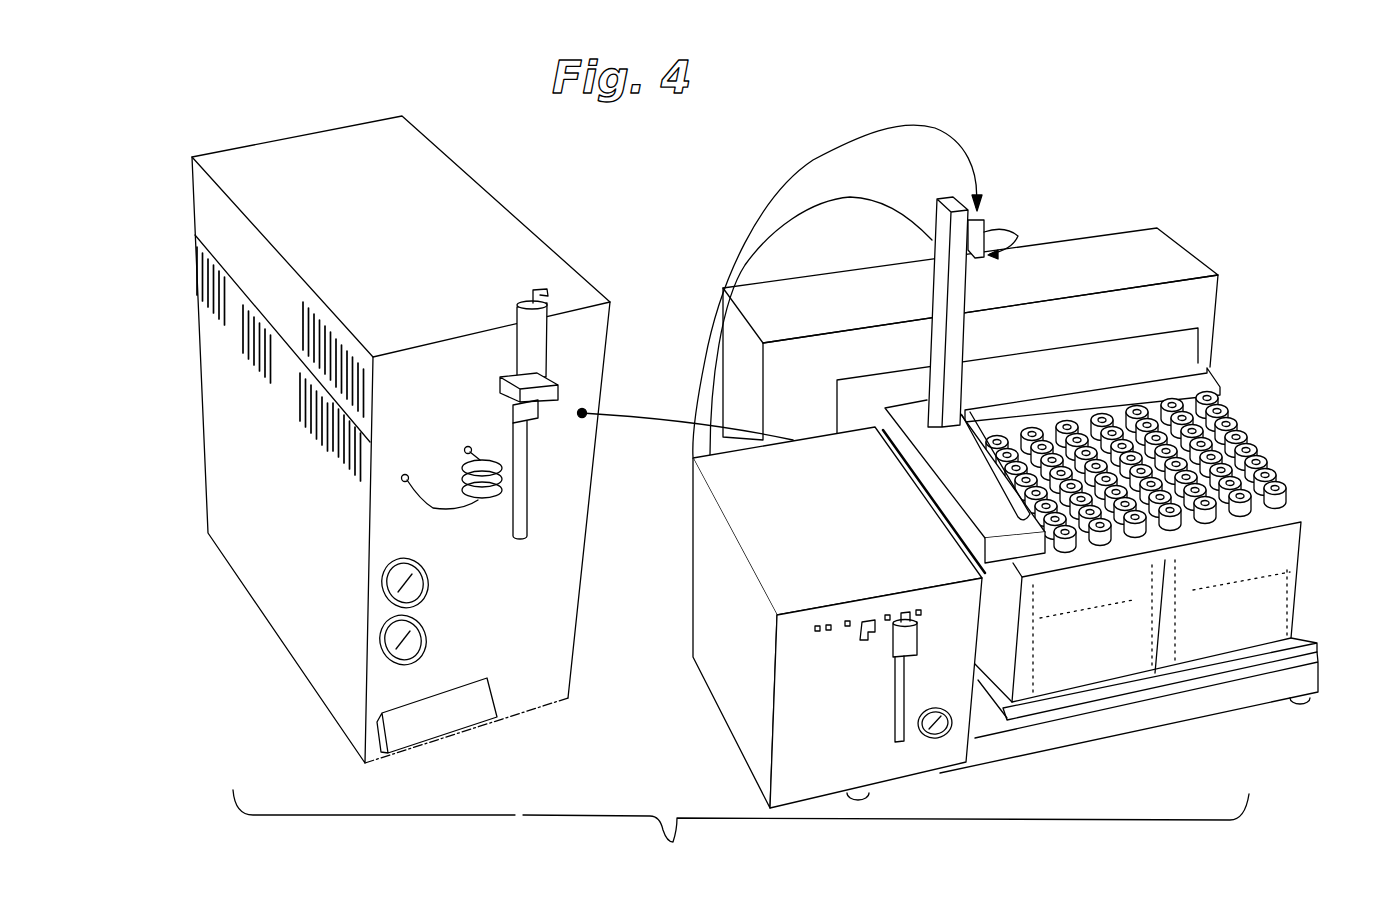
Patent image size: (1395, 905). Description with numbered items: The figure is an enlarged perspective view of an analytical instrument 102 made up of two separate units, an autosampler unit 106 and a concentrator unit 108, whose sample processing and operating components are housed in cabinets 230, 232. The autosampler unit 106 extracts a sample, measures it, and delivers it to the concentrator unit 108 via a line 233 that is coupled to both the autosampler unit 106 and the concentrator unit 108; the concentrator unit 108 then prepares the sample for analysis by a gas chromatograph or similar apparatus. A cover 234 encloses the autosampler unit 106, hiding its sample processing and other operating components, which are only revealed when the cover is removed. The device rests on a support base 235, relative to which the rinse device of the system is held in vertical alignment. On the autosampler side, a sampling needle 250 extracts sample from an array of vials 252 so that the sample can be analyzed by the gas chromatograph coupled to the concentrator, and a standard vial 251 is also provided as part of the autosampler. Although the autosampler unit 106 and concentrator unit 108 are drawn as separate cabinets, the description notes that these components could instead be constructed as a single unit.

The analytical instrument 102 is at (741, 828).
The autosampler unit 106 is at (1072, 240).
The concentrator unit 108 is at (401, 439).
The cabinet 230 is at (850, 725).
The cabinet 232 is at (424, 258).
The line 233 is at (635, 416).
The cover 234 is at (841, 537).
The support base 235 is at (1092, 741).
The sampling needle 250 is at (993, 236).
The standard vial 251 is at (900, 672).
The vials 252 is at (1222, 415).